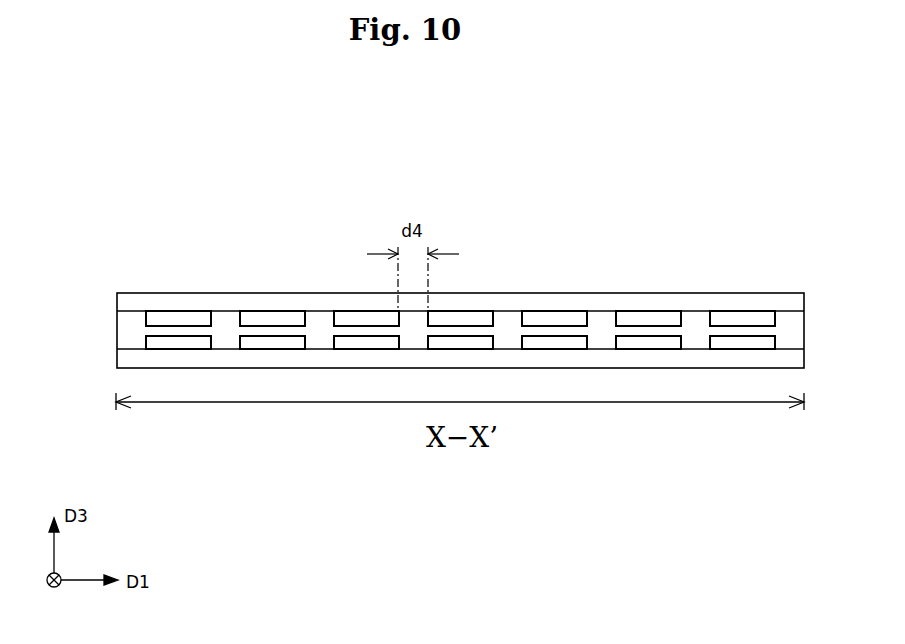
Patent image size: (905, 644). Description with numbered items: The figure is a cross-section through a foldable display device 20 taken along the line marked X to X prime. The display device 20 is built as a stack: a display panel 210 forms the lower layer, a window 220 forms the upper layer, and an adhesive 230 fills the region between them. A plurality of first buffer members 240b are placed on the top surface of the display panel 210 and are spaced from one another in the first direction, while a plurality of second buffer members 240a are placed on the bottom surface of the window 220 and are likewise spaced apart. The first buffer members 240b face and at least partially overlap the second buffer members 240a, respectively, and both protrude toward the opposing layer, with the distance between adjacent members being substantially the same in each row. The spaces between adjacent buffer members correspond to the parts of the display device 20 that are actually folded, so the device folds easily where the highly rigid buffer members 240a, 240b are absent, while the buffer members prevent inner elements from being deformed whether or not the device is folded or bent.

The display device 20 is at (479, 172).
The display panel 210 is at (126, 358).
The window 220 is at (225, 302).
The adhesive 230 is at (322, 323).
The second buffer members 240a is at (169, 320).
The first buffer members 240b is at (160, 342).